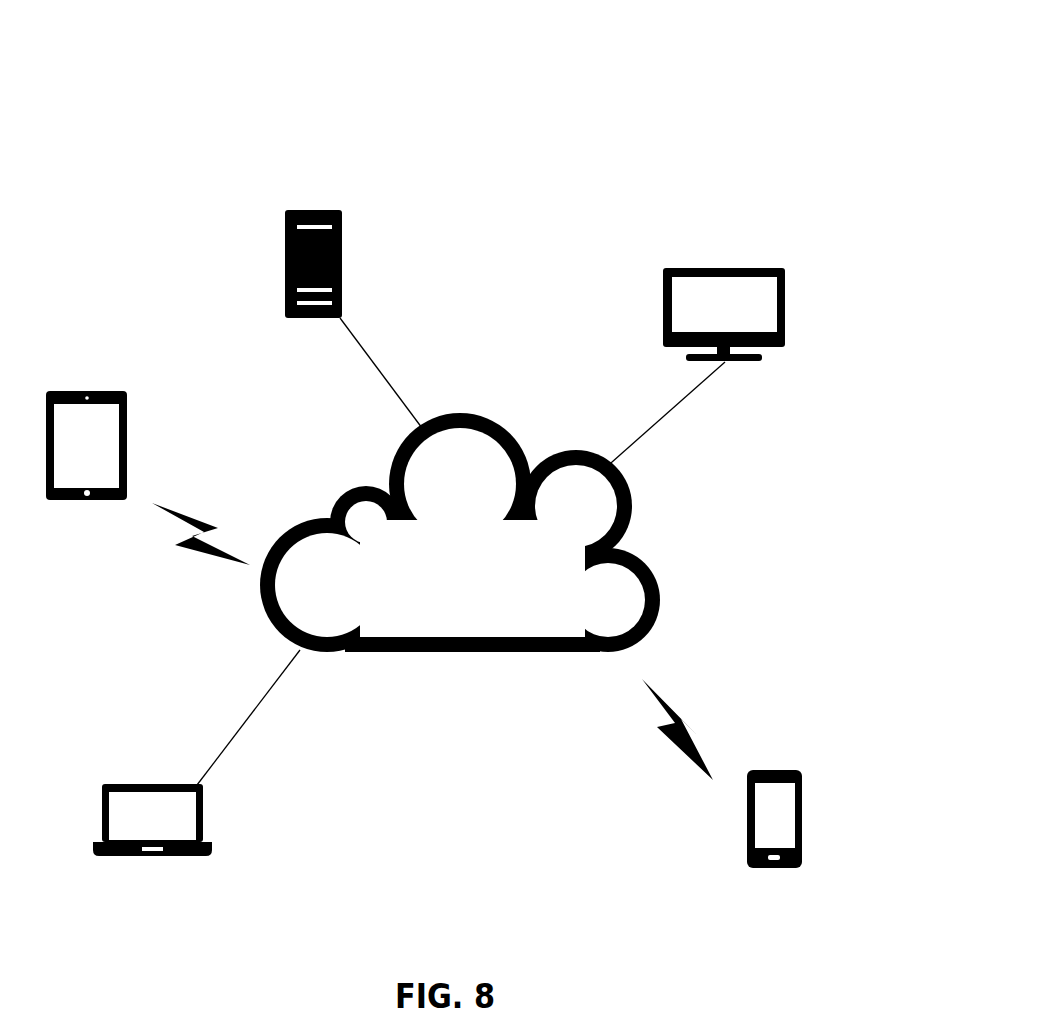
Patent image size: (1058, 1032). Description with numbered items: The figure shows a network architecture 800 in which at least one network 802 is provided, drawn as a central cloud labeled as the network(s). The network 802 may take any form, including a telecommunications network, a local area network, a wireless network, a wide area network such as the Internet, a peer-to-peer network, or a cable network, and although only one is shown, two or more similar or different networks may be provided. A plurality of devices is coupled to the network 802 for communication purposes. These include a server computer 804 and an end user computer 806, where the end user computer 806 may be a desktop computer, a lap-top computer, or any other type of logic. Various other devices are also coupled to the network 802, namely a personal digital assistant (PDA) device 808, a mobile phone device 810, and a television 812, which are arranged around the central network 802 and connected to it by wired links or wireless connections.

The network architecture 800 is at (90, 91).
The network 802 is at (470, 655).
The server computer 804 is at (314, 210).
The end user computer 806 is at (148, 784).
The personal digital assistant (PDA) device 808 is at (88, 390).
The mobile phone device 810 is at (766, 770).
The television 812 is at (729, 268).